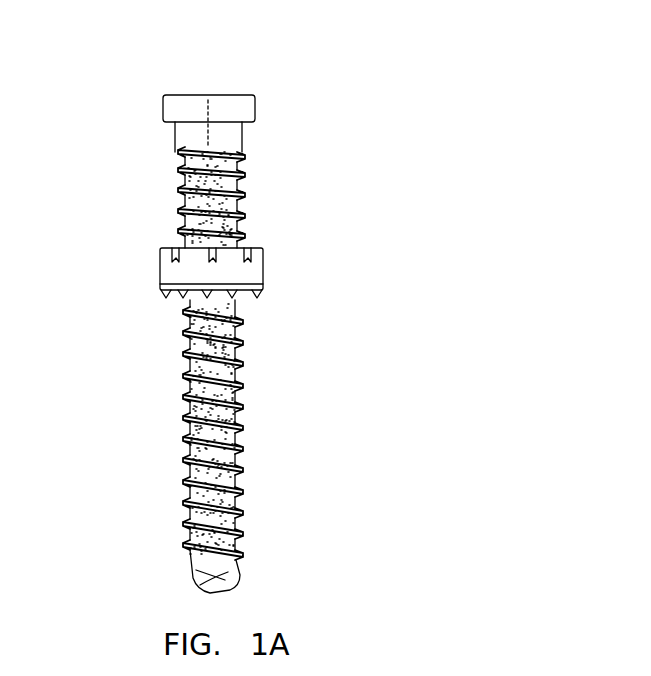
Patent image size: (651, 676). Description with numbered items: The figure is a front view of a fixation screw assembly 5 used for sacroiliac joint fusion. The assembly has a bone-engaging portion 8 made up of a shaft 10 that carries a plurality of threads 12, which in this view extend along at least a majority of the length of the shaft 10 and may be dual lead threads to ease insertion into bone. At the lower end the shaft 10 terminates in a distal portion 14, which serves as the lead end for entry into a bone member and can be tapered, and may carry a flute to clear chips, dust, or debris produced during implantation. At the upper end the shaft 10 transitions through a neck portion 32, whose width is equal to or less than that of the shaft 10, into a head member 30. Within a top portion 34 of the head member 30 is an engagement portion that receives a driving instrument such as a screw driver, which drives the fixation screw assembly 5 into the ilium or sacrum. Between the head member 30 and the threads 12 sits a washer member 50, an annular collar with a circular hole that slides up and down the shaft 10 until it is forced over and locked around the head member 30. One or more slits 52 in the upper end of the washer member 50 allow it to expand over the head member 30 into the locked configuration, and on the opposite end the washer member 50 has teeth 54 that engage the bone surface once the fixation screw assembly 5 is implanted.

The fixation screw assembly 5 is at (468, 115).
The bone-engaging portion 8 is at (245, 333).
The shaft 10 is at (245, 397).
The threads 12 is at (245, 437).
The distal portion 14 is at (248, 581).
The head member 30 is at (255, 101).
The neck portion 32 is at (244, 137).
The top portion 34 is at (218, 95).
The washer member 50 is at (263, 262).
The slits 52 is at (177, 253).
The teeth 54 is at (160, 300).